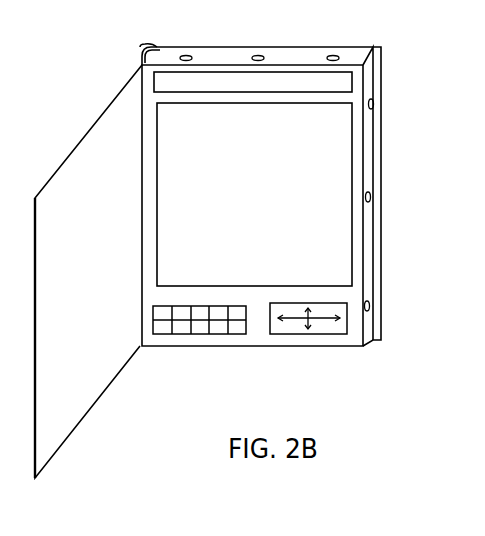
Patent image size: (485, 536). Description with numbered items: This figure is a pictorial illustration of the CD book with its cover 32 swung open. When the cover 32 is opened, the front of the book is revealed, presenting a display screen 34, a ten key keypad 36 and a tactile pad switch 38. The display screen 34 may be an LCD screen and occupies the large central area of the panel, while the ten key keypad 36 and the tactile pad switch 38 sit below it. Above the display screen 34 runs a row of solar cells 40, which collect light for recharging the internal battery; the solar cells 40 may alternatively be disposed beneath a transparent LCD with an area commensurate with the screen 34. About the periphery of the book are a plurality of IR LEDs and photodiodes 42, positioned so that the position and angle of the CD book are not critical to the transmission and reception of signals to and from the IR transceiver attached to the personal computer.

The cover 32 is at (87, 390).
The display screen 34 is at (263, 205).
The ten key keypad 36 is at (230, 334).
The tactile pad switch 38 is at (321, 330).
The row of solar cells 40 is at (274, 83).
The IR LEDs and photodiodes 42 is at (255, 55).